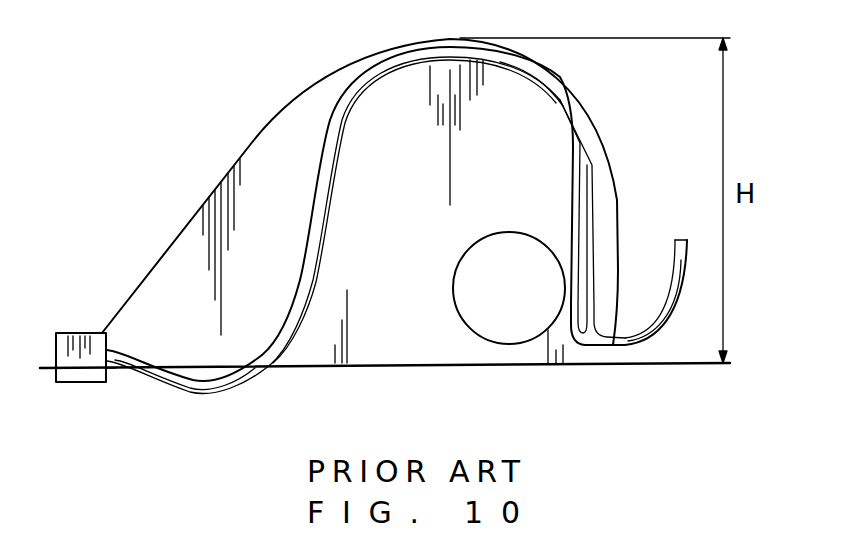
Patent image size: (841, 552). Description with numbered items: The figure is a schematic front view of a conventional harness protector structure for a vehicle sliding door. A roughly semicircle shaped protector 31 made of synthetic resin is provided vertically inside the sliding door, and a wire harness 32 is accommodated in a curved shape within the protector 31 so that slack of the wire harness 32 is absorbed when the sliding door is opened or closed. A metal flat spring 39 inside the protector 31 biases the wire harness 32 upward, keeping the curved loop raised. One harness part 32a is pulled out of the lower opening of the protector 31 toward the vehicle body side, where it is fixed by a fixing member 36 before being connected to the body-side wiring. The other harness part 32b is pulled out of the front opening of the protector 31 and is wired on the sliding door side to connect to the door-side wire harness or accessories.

The protector 31 is at (270, 118).
The wire harness 32 is at (323, 222).
The harness part 32a is at (197, 392).
The harness part 32b is at (620, 350).
The fixing member 36 is at (80, 373).
The flat spring 39 is at (543, 97).